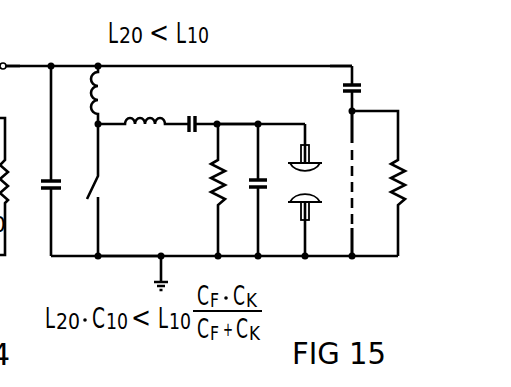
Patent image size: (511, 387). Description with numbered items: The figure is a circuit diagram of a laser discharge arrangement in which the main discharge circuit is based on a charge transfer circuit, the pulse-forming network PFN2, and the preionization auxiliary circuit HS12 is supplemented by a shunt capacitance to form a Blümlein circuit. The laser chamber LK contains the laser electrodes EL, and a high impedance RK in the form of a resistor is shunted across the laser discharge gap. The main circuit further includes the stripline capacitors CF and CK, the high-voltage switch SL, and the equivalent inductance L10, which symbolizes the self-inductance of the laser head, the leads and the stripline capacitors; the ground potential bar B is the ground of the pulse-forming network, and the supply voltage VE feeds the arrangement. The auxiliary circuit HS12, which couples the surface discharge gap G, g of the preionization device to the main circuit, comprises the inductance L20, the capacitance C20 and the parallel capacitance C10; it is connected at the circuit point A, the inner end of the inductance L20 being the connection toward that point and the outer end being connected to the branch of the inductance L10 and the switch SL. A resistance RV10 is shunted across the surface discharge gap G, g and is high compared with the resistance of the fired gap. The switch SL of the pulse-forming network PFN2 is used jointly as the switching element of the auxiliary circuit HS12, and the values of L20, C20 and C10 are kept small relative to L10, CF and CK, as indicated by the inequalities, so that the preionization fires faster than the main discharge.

The circuit point A is at (10, 80).
The parallel capacitance C10 is at (63, 184).
The inductance L20 is at (101, 95).
The high-voltage switch SL is at (100, 188).
The equivalent inductance L10 is at (146, 128).
The stripline capacitor CF is at (192, 115).
The auxiliary circuit HS12 is at (279, 107).
The high impedance RK is at (213, 190).
The stripline capacitor CK is at (250, 183).
The laser electrodes EL is at (284, 213).
The laser chamber LK is at (306, 182).
The capacitance of auxiliary circuit C20 is at (342, 90).
The supply voltage VE is at (324, 59).
The surface discharge gap G is at (353, 178).
The surface discharge gap electrode g is at (351, 133).
The resistance RV10 is at (395, 194).
The pulse-forming network PFN2 is at (165, 244).
The ground potential bar B is at (157, 259).